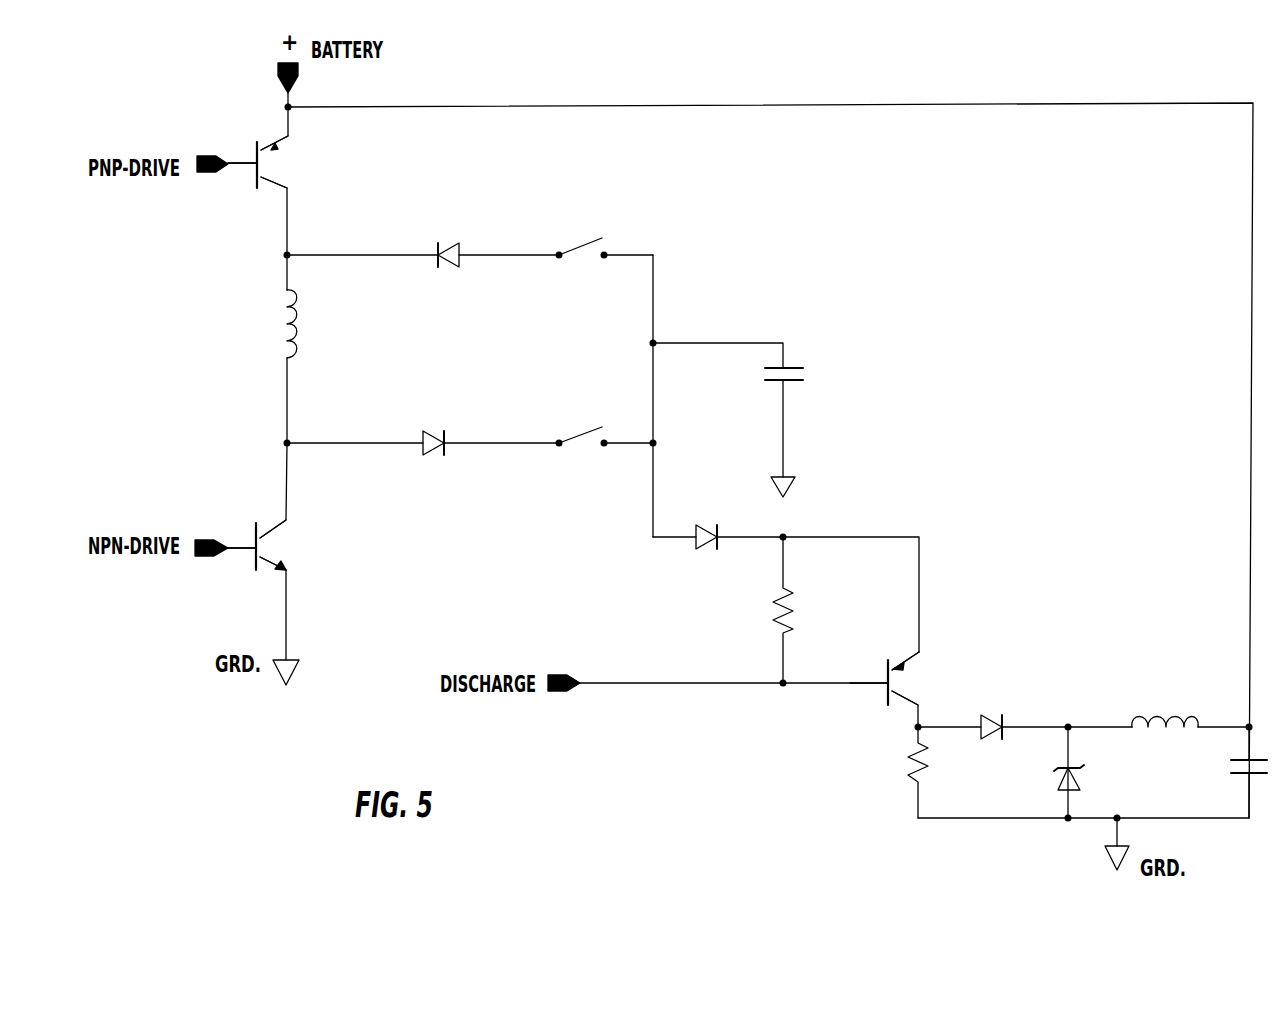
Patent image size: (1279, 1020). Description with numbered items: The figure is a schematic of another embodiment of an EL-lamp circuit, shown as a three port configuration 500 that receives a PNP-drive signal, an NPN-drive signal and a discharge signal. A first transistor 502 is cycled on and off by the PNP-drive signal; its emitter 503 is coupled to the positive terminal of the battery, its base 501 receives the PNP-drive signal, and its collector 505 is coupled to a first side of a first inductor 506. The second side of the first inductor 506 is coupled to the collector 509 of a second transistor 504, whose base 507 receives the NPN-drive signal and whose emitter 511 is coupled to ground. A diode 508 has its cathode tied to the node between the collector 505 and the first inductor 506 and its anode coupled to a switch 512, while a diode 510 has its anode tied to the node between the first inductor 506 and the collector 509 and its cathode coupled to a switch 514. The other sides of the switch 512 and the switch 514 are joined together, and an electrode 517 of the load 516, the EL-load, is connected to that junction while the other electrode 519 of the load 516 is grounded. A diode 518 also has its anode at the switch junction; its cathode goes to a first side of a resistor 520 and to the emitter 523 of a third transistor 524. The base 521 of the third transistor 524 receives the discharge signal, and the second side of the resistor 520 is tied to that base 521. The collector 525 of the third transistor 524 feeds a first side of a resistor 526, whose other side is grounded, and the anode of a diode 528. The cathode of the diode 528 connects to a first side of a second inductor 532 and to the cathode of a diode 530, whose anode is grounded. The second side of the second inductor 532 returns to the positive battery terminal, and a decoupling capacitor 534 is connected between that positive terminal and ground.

The three port configuration 500 is at (1033, 94).
The PNP transistor base 501 is at (256, 182).
The first transistor 502 is at (250, 141).
The emitter 503 is at (278, 144).
The second transistor 504 is at (261, 516).
The collector 505 is at (282, 183).
The first inductor 506 is at (299, 327).
The base 507 is at (258, 558).
The diode 508 is at (452, 236).
The collector 509 is at (278, 530).
The diode 510 is at (432, 428).
The emitter 511 is at (272, 557).
The switch 512 is at (594, 232).
The switch 514 is at (584, 430).
The load 516 is at (766, 377).
The electrode 517 is at (771, 401).
The diode 518 is at (703, 526).
The electrode 519 is at (796, 384).
The resistor 520 is at (795, 589).
The base 521 is at (880, 691).
The emitter 523 is at (906, 666).
The third transistor 524 is at (887, 658).
The collector 525 is at (912, 702).
The resistor 526 is at (902, 762).
The diode 528 is at (998, 709).
The diode 530 is at (1083, 780).
The second inductor 532 is at (1157, 714).
The decoupling capacitor 534 is at (1230, 769).